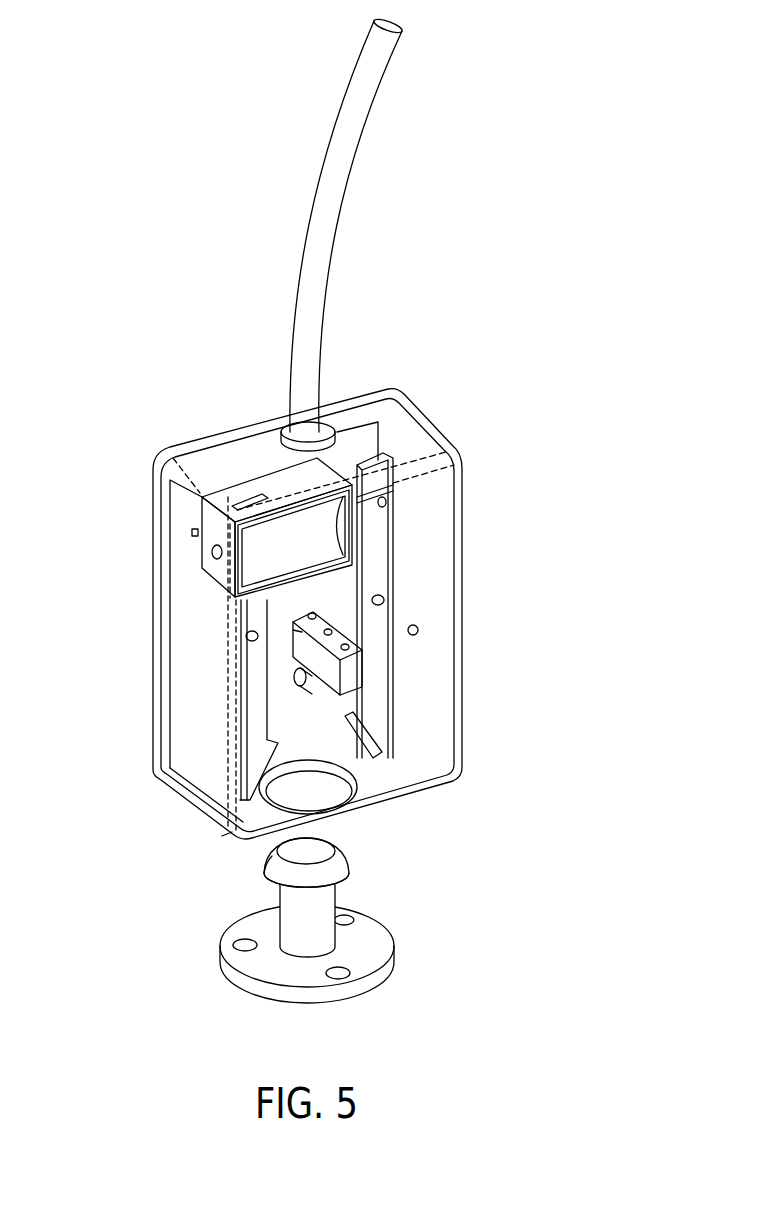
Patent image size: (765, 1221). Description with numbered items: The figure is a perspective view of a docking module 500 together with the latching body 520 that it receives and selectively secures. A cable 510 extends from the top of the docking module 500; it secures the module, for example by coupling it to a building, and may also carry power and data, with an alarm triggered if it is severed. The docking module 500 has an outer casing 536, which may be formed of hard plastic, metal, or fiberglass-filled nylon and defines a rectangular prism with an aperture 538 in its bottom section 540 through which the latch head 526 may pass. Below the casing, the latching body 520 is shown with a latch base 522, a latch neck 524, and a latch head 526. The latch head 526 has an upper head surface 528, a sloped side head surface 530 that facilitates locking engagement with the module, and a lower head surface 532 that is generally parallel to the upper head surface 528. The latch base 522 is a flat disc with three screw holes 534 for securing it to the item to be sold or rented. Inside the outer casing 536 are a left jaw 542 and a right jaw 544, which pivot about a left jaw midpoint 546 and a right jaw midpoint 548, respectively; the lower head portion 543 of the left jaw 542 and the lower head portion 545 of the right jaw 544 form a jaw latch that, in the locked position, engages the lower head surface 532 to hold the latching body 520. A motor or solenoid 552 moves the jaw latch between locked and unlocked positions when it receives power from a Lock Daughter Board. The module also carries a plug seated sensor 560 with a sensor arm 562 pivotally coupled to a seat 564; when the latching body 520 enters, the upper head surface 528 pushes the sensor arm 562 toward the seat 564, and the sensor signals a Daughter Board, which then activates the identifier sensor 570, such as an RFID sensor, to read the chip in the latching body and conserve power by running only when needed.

The docking module 500 is at (203, 413).
The cable 510 is at (337, 198).
The latching body 520 is at (213, 920).
The latch base 522 is at (258, 983).
The latch neck 524 is at (316, 930).
The latch head 526 is at (335, 858).
The upper head surface 528 is at (303, 843).
The side head surface 530 is at (340, 866).
The lower head surface 532 is at (268, 873).
The screw holes 534 is at (349, 917).
The outer casing 536 is at (437, 553).
The aperture 538 is at (340, 790).
The bottom section 540 is at (222, 836).
The left jaw 542 is at (246, 727).
The lower head portion of the left jaw 543 is at (250, 764).
The right jaw 544 is at (380, 717).
The lower head portion of the right jaw 545 is at (380, 745).
The left jaw midpoint 546 is at (246, 636).
The right jaw midpoint 548 is at (384, 600).
The motor or solenoid 552 is at (212, 551).
The plug seated sensor 560 is at (361, 676).
The sensor arm 562 is at (308, 690).
The seat 564 is at (302, 632).
The identifier sensor 570 is at (186, 585).